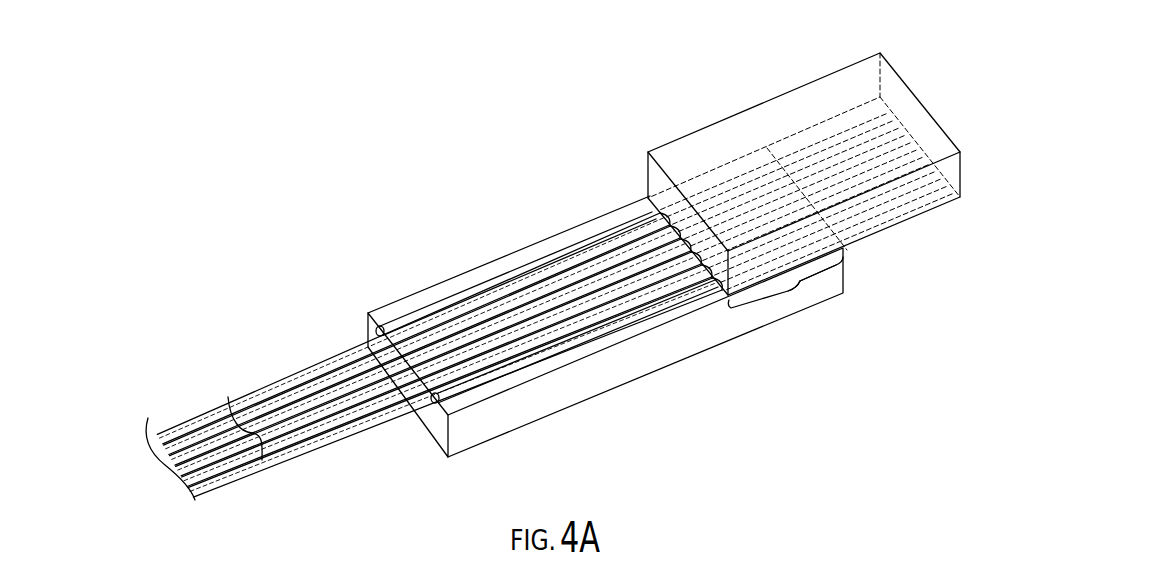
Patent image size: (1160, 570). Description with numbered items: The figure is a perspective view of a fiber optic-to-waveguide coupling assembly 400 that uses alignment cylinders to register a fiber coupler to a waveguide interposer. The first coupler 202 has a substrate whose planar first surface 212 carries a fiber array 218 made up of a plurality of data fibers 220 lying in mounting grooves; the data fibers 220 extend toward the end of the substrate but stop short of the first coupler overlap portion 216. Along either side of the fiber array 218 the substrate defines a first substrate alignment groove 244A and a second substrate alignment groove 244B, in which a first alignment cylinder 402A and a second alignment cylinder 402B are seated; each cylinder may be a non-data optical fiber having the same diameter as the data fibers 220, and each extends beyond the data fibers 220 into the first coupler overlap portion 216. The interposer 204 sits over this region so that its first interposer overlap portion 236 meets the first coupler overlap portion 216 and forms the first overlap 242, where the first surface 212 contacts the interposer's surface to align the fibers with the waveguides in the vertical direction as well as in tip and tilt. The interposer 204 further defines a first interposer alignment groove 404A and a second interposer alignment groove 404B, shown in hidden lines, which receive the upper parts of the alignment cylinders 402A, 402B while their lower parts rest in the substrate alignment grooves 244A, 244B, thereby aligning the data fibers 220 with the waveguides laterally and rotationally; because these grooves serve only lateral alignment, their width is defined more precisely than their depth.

The fiber optic-to-waveguide coupling assembly 400 is at (503, 158).
The first coupler 202 is at (404, 291).
The interposer 204 is at (843, 66).
The first surface 212 is at (603, 222).
The first coupler overlap portion 216 is at (797, 287).
The first interposer overlap portion 236 is at (794, 286).
The first overlap 242 is at (818, 273).
The fiber array 218 is at (244, 430).
The data fibers 220 is at (255, 389).
The first substrate alignment groove 244A is at (455, 289).
The second substrate alignment groove 244B is at (507, 374).
The first alignment cylinder 402A is at (552, 236).
The second alignment cylinder 402B is at (615, 323).
The first interposer alignment groove 404A is at (875, 218).
The second interposer alignment groove 404B is at (720, 181).